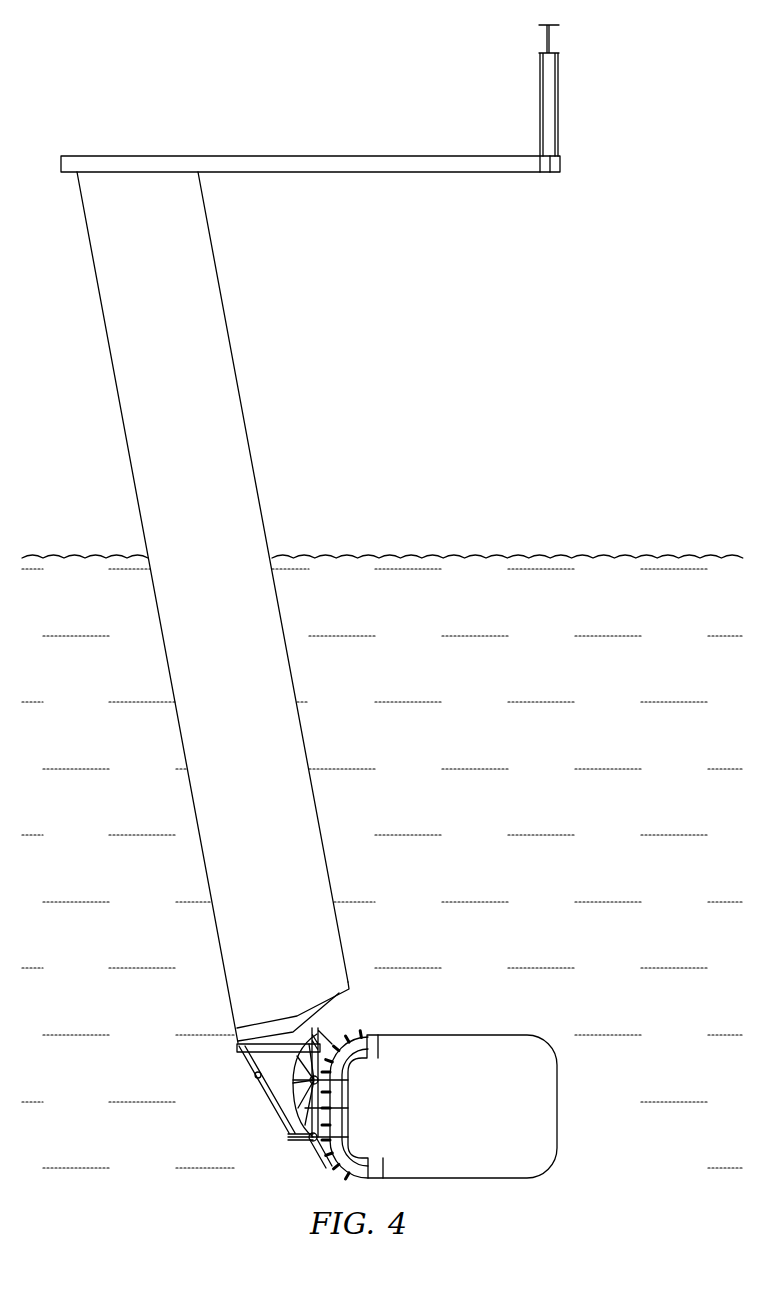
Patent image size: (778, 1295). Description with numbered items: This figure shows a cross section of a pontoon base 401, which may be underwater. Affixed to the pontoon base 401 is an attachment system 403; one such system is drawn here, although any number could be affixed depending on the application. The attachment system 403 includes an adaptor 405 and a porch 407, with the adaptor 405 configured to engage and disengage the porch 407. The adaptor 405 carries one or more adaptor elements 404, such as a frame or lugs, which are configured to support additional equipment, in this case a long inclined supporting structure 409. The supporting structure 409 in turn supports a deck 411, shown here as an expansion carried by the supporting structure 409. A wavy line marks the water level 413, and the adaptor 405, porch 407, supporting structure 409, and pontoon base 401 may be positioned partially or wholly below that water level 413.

The pontoon base 401 is at (477, 1131).
The attachment system 403 is at (358, 1002).
The adaptor elements 404 is at (332, 1036).
The adaptor 405 is at (248, 1062).
The porch 407 is at (336, 1168).
The supporting structure 409 is at (258, 745).
The deck 411 is at (302, 158).
The water level 413 is at (555, 550).